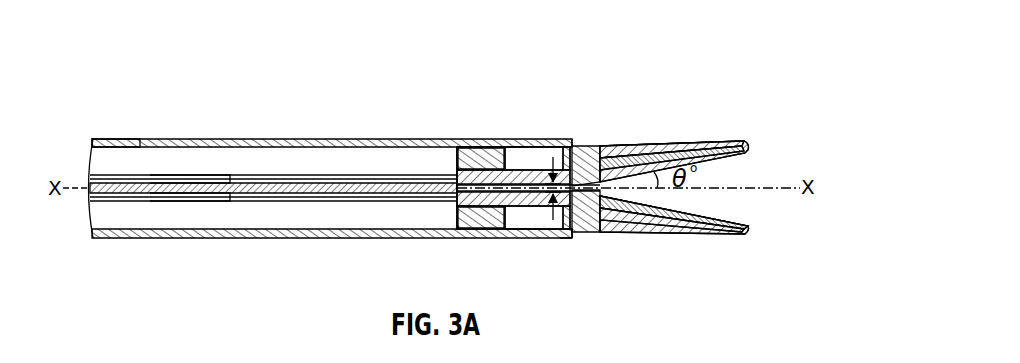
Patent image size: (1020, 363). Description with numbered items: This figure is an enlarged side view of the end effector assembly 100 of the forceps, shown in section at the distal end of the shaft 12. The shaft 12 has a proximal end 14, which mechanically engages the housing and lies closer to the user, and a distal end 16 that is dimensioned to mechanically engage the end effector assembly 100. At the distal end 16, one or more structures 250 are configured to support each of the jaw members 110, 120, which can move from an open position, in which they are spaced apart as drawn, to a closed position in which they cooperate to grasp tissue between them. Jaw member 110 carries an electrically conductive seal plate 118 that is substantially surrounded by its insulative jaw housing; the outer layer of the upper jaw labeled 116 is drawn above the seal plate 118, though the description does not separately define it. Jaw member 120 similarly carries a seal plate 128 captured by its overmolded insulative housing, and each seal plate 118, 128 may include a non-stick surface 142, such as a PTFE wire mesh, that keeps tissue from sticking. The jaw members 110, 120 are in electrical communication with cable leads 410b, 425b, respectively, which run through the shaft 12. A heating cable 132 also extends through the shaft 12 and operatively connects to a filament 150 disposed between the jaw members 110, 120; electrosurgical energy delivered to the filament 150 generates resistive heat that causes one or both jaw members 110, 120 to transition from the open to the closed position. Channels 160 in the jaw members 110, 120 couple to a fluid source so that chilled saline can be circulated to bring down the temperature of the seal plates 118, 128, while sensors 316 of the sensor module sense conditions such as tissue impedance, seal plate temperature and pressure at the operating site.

The shaft 12 is at (298, 133).
The proximal end 14 is at (572, 234).
The distal end 16 is at (112, 138).
The end effector assembly 100 is at (527, 221).
The jaw member 110 is at (702, 140).
The upper jaw outer layer 116 is at (645, 148).
The seal plate 118 is at (727, 157).
The jaw member 120 is at (702, 236).
The seal plate 128 is at (718, 213).
The heating cable 132 is at (345, 202).
The non-stick surface 142 is at (716, 224).
The filament 150 is at (455, 176).
The channels 160 is at (592, 147).
The structures 250 is at (490, 150).
The sensors 316 is at (554, 156).
The cable lead 410b is at (188, 178).
The cable lead 425b is at (188, 200).